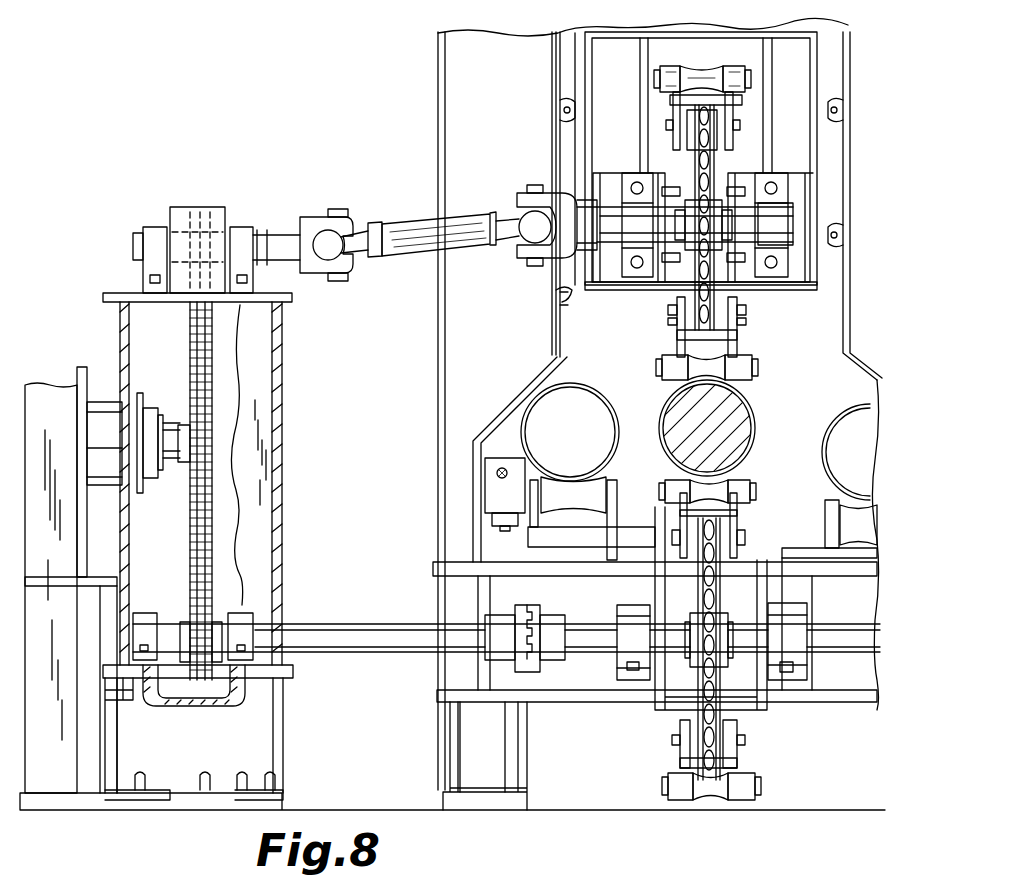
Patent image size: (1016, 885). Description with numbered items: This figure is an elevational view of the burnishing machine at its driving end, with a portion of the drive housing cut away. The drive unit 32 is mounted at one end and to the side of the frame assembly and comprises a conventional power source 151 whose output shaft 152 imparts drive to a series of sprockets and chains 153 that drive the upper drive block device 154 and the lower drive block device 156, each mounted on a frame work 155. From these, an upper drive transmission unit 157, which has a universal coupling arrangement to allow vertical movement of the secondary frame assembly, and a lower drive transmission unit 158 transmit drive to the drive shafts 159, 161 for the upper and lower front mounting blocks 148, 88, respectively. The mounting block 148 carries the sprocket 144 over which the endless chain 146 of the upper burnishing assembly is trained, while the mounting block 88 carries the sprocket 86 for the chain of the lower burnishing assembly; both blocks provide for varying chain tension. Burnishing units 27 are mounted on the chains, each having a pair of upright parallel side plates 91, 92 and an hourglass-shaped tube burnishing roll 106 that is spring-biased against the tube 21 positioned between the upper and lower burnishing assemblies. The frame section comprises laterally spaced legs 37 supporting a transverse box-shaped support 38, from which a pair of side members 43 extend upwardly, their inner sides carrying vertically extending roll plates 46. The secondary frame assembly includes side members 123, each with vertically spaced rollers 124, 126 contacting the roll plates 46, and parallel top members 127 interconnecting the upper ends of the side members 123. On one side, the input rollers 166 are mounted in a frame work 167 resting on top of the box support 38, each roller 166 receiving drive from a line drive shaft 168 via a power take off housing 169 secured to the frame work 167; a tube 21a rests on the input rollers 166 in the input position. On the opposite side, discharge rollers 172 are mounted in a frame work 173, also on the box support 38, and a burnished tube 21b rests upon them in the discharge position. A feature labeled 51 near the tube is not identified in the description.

The tube 21 is at (748, 402).
The tube in input position 21a is at (530, 395).
The tube in discharge position 21b is at (858, 403).
The burnishing unit 27 is at (748, 60).
The drive unit 32 is at (115, 215).
The legs 37 is at (450, 742).
The transverse box-shaped support 38 is at (440, 572).
The side members 43 is at (440, 110).
The roll plates 46 is at (568, 297).
The pipe surface 51 is at (673, 410).
The sprocket 86 is at (716, 708).
The mounting block 88 is at (628, 283).
The side plate 91 is at (675, 110).
The side plate 92 is at (733, 122).
The tube burnishing roll 106 is at (766, 333).
The side members 123 is at (612, 60).
The roller 124 is at (558, 113).
The roller 126 is at (848, 115).
The top members 127 is at (703, 26).
The sprocket 144 is at (704, 265).
The endless chain 146 is at (690, 134).
The mounting block 148 is at (773, 180).
The power source 151 is at (57, 383).
The output shaft 152 is at (166, 402).
The series of sprockets and chains 153 is at (218, 398).
The upper drive block device 154 is at (212, 220).
The frame work 155 is at (268, 448).
The lower drive block device 156 is at (187, 678).
The upper drive transmission unit 157 is at (412, 222).
The lower drive transmission unit 158 is at (388, 615).
The drive shaft 159 is at (608, 197).
The drive shaft 161 is at (600, 625).
The input rollers 166 is at (580, 478).
The frame work 167 is at (572, 535).
The line drive shaft 168 is at (496, 471).
The power take off housing 169 is at (490, 500).
The discharge rollers 172 is at (840, 500).
The frame work 173 is at (828, 560).